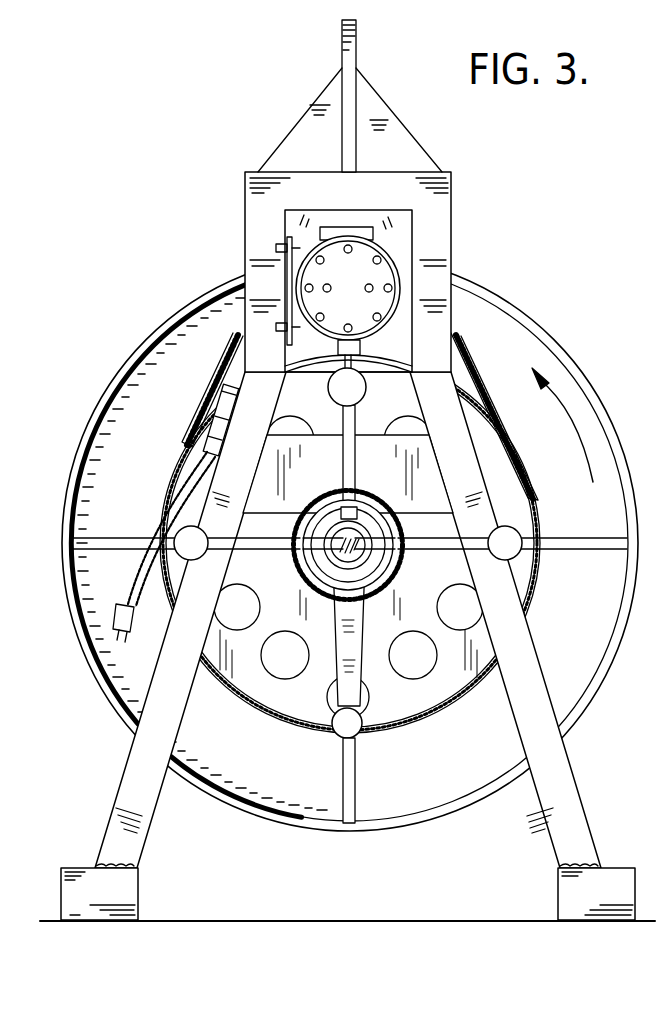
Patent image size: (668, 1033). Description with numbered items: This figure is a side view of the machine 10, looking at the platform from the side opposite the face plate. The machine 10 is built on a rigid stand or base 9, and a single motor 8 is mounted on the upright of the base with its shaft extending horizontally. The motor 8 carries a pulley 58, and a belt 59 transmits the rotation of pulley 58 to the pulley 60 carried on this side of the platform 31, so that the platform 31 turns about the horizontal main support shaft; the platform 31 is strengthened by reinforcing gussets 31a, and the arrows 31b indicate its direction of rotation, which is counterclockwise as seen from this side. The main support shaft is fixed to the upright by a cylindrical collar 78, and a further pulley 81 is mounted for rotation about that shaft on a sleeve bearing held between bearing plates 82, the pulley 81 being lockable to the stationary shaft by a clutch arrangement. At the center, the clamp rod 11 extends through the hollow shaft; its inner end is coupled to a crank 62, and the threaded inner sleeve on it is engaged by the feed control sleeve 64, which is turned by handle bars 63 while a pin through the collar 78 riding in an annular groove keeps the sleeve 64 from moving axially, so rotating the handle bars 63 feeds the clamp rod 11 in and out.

The motor 8 is at (356, 284).
The stand or base 9 is at (257, 219).
The machine 10 is at (526, 252).
The clamp rod 11 is at (335, 553).
The platform 31 is at (118, 369).
The reinforcing gussets 31a is at (346, 792).
The arrows 31b is at (570, 418).
The pulley 58 is at (316, 219).
The belt 59 is at (412, 216).
The pulley 60 is at (512, 506).
The crank 62 is at (352, 668).
The handle bars 63 is at (343, 464).
The feed control sleeve 64 is at (320, 574).
The cylindrical collar 78 is at (390, 585).
The pulley 81 is at (354, 577).
The hub toothed ring 82 is at (406, 560).